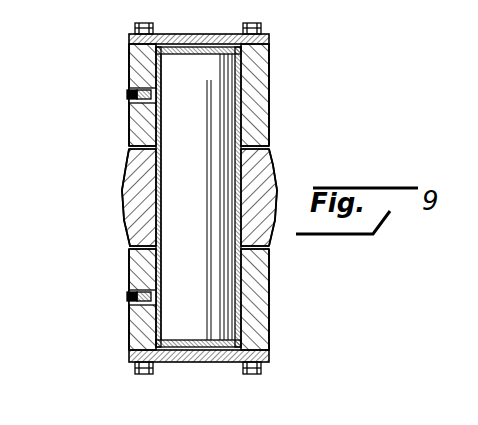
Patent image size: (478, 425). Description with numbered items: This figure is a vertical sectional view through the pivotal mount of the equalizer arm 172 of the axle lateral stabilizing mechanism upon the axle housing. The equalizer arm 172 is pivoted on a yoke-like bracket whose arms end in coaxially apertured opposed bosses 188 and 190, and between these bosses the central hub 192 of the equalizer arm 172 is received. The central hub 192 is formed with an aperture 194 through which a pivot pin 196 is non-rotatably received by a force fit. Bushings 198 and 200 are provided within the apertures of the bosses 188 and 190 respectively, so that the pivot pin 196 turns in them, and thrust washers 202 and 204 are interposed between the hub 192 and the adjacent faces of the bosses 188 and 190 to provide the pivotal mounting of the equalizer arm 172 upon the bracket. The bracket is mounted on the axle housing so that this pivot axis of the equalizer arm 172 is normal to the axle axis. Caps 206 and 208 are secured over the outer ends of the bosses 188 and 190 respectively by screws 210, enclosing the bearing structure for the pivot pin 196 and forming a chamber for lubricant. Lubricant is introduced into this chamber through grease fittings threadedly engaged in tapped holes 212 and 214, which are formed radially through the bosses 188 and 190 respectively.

The equalizer arm 172 is at (121, 188).
The boss 188 is at (271, 62).
The boss 190 is at (258, 270).
The central hub 192 is at (139, 170).
The aperture 194 is at (234, 174).
The pivot pin 196 is at (228, 298).
The bushing 198 is at (163, 78).
The bushing 200 is at (158, 270).
The thrust washer 202 is at (137, 148).
The thrust washer 204 is at (137, 248).
The cap 206 is at (216, 39).
The cap 208 is at (131, 357).
The screws 210 is at (135, 27).
The tapped hole 212 is at (153, 93).
The tapped hole 214 is at (135, 298).